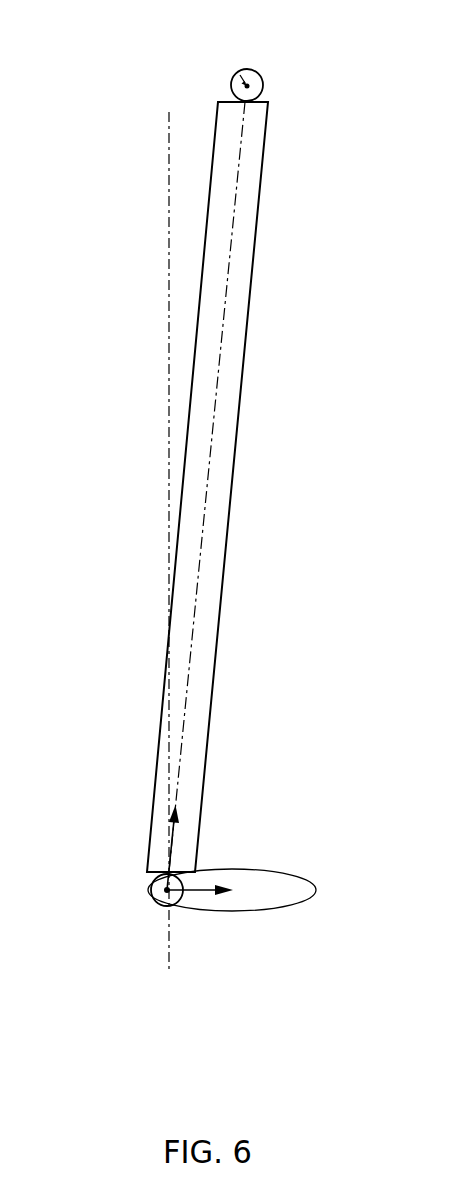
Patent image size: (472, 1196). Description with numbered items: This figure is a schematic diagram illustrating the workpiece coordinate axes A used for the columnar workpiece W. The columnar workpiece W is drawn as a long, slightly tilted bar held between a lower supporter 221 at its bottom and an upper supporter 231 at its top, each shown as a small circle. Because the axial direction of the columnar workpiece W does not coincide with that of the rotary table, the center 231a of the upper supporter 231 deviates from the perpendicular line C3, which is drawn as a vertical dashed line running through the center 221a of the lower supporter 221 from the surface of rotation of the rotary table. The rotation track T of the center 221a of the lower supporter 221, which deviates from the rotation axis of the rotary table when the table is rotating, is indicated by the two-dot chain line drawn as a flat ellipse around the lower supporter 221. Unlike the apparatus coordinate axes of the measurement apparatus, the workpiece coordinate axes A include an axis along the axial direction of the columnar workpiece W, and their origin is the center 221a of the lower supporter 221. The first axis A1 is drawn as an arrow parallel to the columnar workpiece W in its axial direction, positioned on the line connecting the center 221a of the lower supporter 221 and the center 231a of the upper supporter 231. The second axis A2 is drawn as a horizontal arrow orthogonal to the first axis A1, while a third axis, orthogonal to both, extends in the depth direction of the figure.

The columnar workpiece W is at (230, 492).
The perpendicular line C3 is at (168, 300).
The rotation track T is at (267, 910).
The upper supporter 231 is at (263, 82).
The center of the upper supporter 231a is at (236, 77).
The lower supporter 221 is at (152, 884).
The center of the lower supporter 221a is at (160, 900).
The first axis A1 is at (191, 838).
The second axis A2 is at (218, 892).
The workpiece coordinate axes A is at (189, 906).